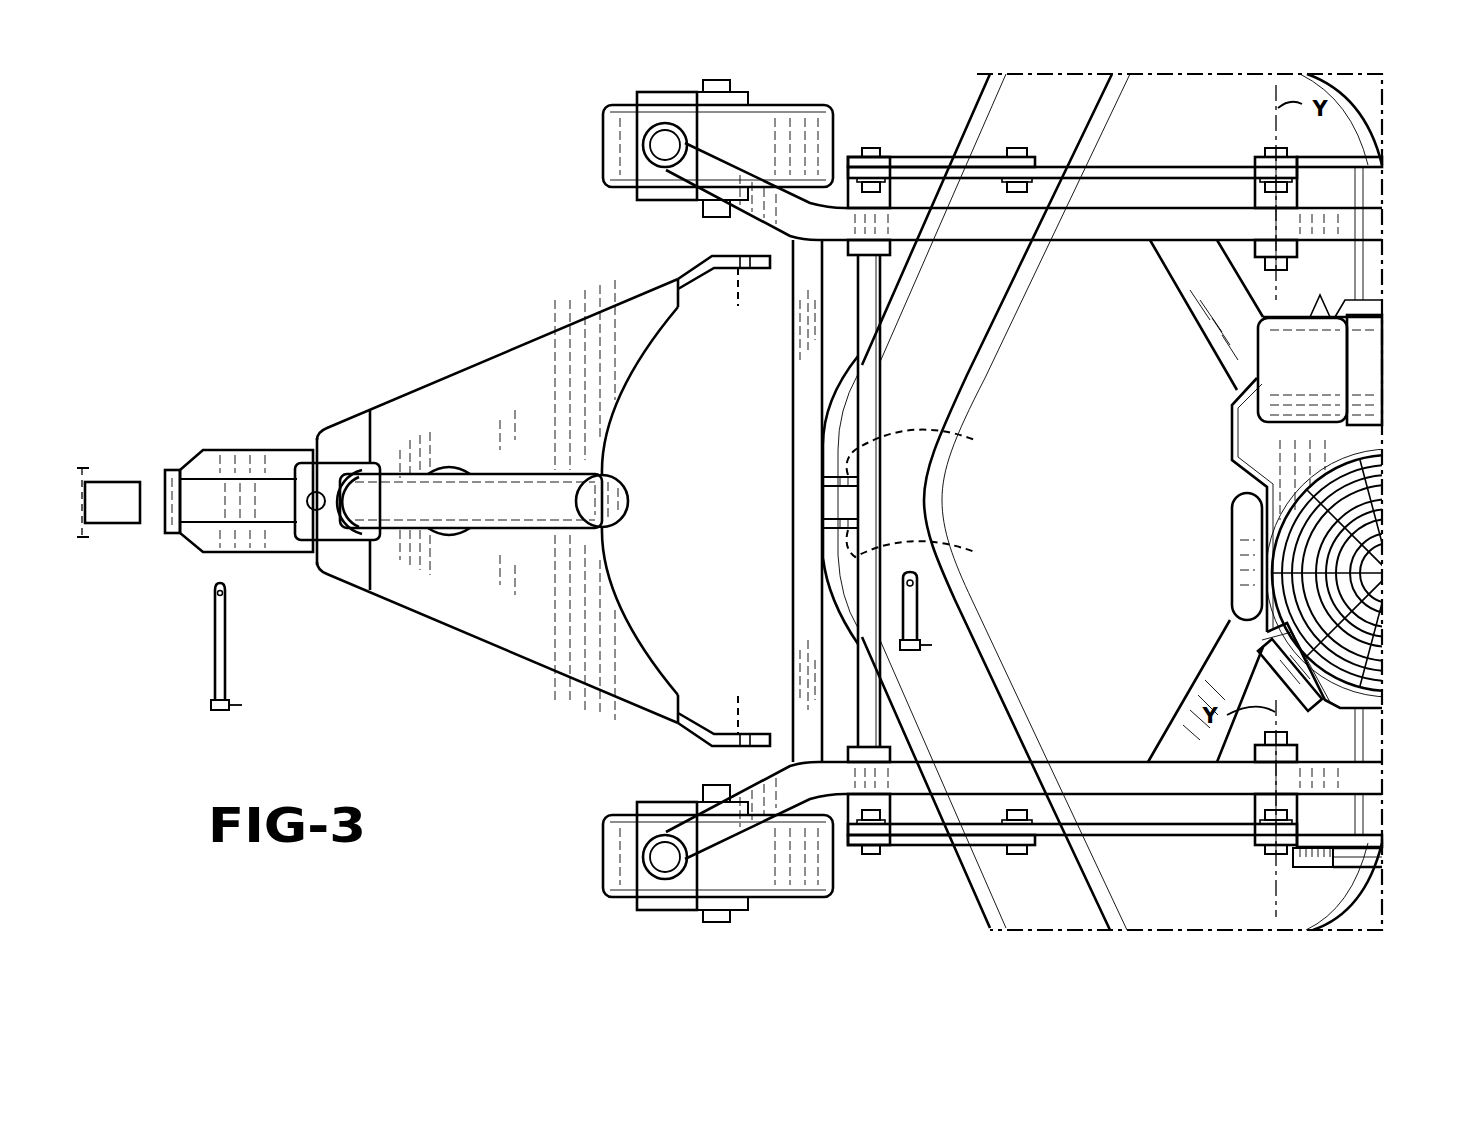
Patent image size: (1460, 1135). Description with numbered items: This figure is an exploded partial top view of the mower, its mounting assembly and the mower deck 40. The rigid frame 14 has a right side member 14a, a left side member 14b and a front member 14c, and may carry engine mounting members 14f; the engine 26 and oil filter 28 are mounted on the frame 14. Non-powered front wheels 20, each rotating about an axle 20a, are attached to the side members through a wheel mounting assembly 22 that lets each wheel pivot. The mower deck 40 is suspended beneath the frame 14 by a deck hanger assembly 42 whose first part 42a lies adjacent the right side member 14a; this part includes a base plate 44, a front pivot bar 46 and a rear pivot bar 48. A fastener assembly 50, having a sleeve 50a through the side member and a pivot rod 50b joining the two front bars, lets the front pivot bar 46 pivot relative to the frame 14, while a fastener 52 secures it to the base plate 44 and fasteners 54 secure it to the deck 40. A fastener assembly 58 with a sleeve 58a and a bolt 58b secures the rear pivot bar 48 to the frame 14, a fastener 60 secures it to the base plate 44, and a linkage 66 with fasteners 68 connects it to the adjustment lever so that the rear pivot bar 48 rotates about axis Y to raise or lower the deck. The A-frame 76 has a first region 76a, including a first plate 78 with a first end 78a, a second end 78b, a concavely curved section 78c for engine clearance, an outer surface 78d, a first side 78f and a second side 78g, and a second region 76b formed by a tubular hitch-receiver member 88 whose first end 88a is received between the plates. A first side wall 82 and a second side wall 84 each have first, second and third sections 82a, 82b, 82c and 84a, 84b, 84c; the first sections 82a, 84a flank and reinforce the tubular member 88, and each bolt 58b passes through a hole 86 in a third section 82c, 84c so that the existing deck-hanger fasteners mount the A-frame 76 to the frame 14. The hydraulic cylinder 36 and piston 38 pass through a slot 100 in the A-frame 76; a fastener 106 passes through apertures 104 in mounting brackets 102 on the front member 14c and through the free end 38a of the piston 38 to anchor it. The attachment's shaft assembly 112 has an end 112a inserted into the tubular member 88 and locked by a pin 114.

The rigid frame 14 is at (1040, 501).
The right side member 14a is at (1178, 230).
The left side member 14b is at (1177, 773).
The front member 14c is at (798, 530).
The engine mounting members 14f is at (1197, 293).
The front wheels 20 is at (672, 501).
The axle 20a is at (712, 217).
The wheel mounting assembly 22 is at (638, 143).
The engine 26 is at (1230, 423).
The oil filter 28 is at (1288, 370).
The cylinder 36 is at (632, 485).
The piston 38 is at (340, 497).
The free end 38a is at (298, 510).
The mower deck 40 is at (1122, 502).
The deck hanger assembly 42 is at (1122, 502).
The first part 42a is at (1185, 157).
The base plate 44 is at (1142, 168).
The front pivot bar 46 is at (930, 155).
The rear pivot bar 48 is at (1327, 153).
The fastener assembly 50 is at (922, 501).
The sleeve 50a is at (895, 752).
The pivot rod 50b is at (880, 400).
The fastener 52 is at (864, 148).
The fasteners 54 is at (1017, 148).
The fastener assembly 58 is at (1351, 501).
The sleeve 58a is at (1351, 501).
The bolt 58b is at (1290, 270).
The fastener 60 is at (1264, 155).
The linkage 66 is at (1387, 862).
The fasteners 68 is at (1286, 866).
The A-frame 76 is at (484, 504).
The first region 76a is at (484, 504).
The second region 76b is at (203, 538).
The first plate 78 is at (484, 504).
The first end 78a is at (317, 438).
The second end 78b is at (690, 285).
The concavely curved section 78c is at (612, 577).
The outer surface 78d is at (503, 600).
The first side 78f is at (482, 357).
The second side 78g is at (485, 643).
The first side wall 82 is at (716, 319).
The first section 82a is at (203, 512).
The second section 82b is at (703, 292).
The third section 82c is at (756, 270).
The second side wall 84 is at (716, 683).
The first section 84a is at (202, 552).
The second section 84b is at (702, 720).
The third section 84c is at (756, 732).
The hole 86 is at (741, 501).
The tubular member 88 is at (186, 449).
The first end 88a is at (172, 470).
The slot 100 is at (428, 468).
The mounting brackets 102 is at (862, 478).
The aperture 104 is at (934, 496).
The fastener 106 is at (917, 607).
The shaft assembly 112 is at (114, 484).
The end 112a is at (118, 518).
The pin 114 is at (213, 655).